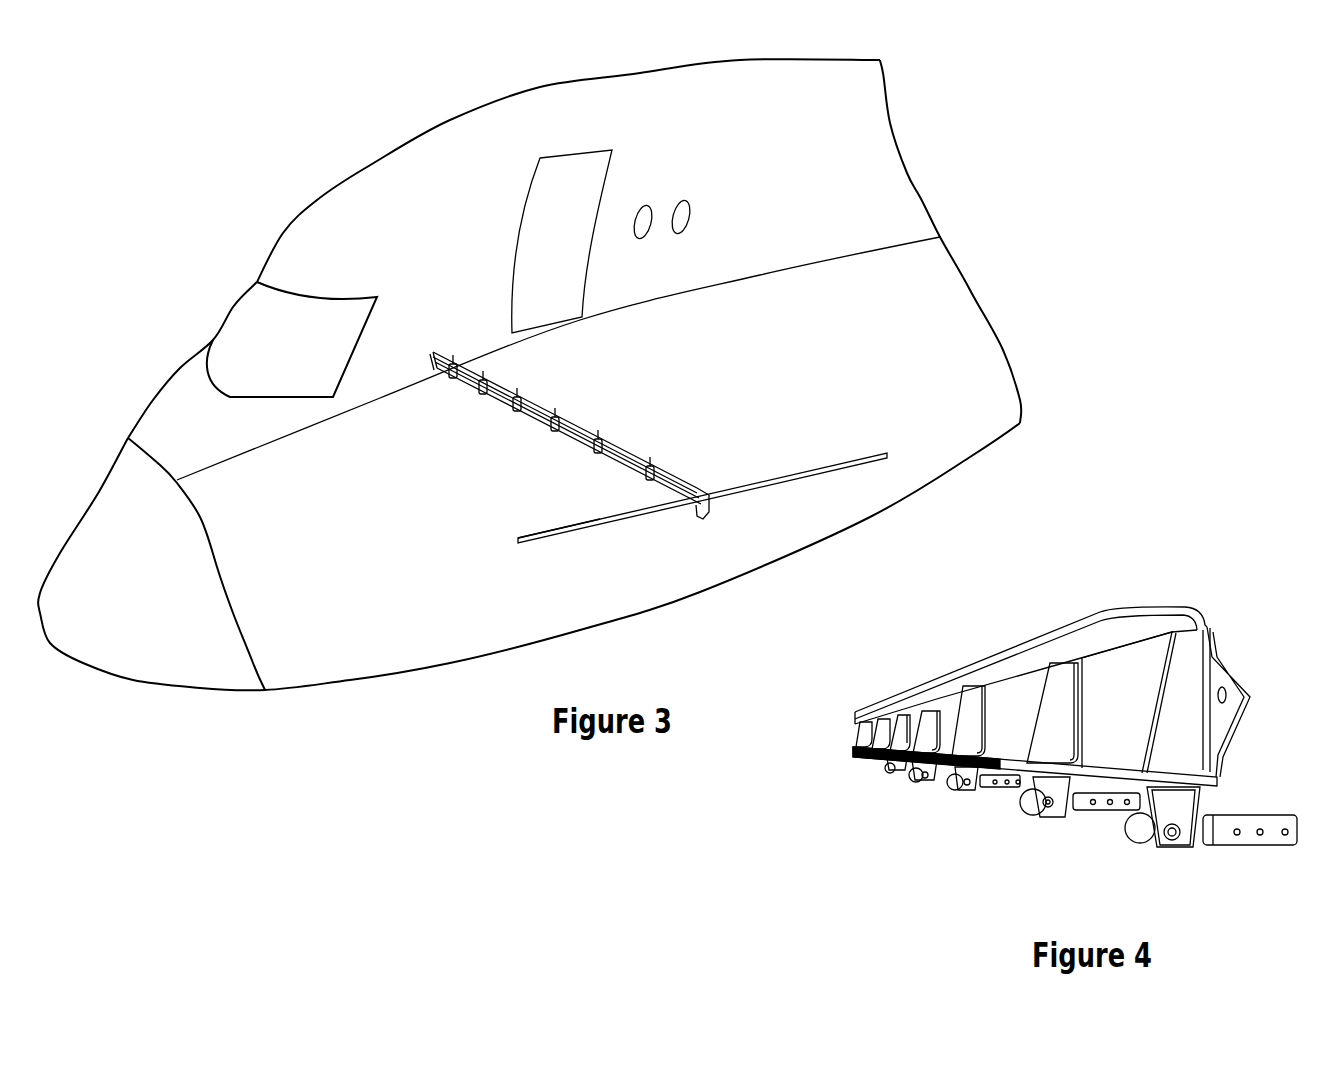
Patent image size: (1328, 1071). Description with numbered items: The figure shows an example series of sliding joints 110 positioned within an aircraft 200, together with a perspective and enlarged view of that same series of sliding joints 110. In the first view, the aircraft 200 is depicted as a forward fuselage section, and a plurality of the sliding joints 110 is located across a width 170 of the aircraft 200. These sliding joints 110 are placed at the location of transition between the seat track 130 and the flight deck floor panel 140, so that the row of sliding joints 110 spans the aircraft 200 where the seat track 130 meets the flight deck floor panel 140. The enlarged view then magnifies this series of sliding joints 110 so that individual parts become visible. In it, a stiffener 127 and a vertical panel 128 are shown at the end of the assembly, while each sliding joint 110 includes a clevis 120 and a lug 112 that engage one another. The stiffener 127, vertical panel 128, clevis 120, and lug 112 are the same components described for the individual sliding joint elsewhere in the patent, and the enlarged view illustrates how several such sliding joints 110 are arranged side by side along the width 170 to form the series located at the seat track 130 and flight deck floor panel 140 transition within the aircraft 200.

In FIG. 3, the aircraft 200 is at (565, 276).
In FIG. 3, the width 170 is at (543, 408).
In FIG. 3, the sliding joint 110 is at (553, 440).
In FIG. 4, the sliding joint 110 is at (960, 793).
In FIG. 3, the seat track 130 is at (743, 487).
In FIG. 3, the flight deck floor panel 140 is at (563, 533).
In FIG. 4, the vertical panel 128 is at (1135, 690).
In FIG. 4, the stiffener 127 is at (1185, 743).
In FIG. 4, the clevis 120 is at (1185, 810).
In FIG. 4, the lug 112 is at (1225, 837).